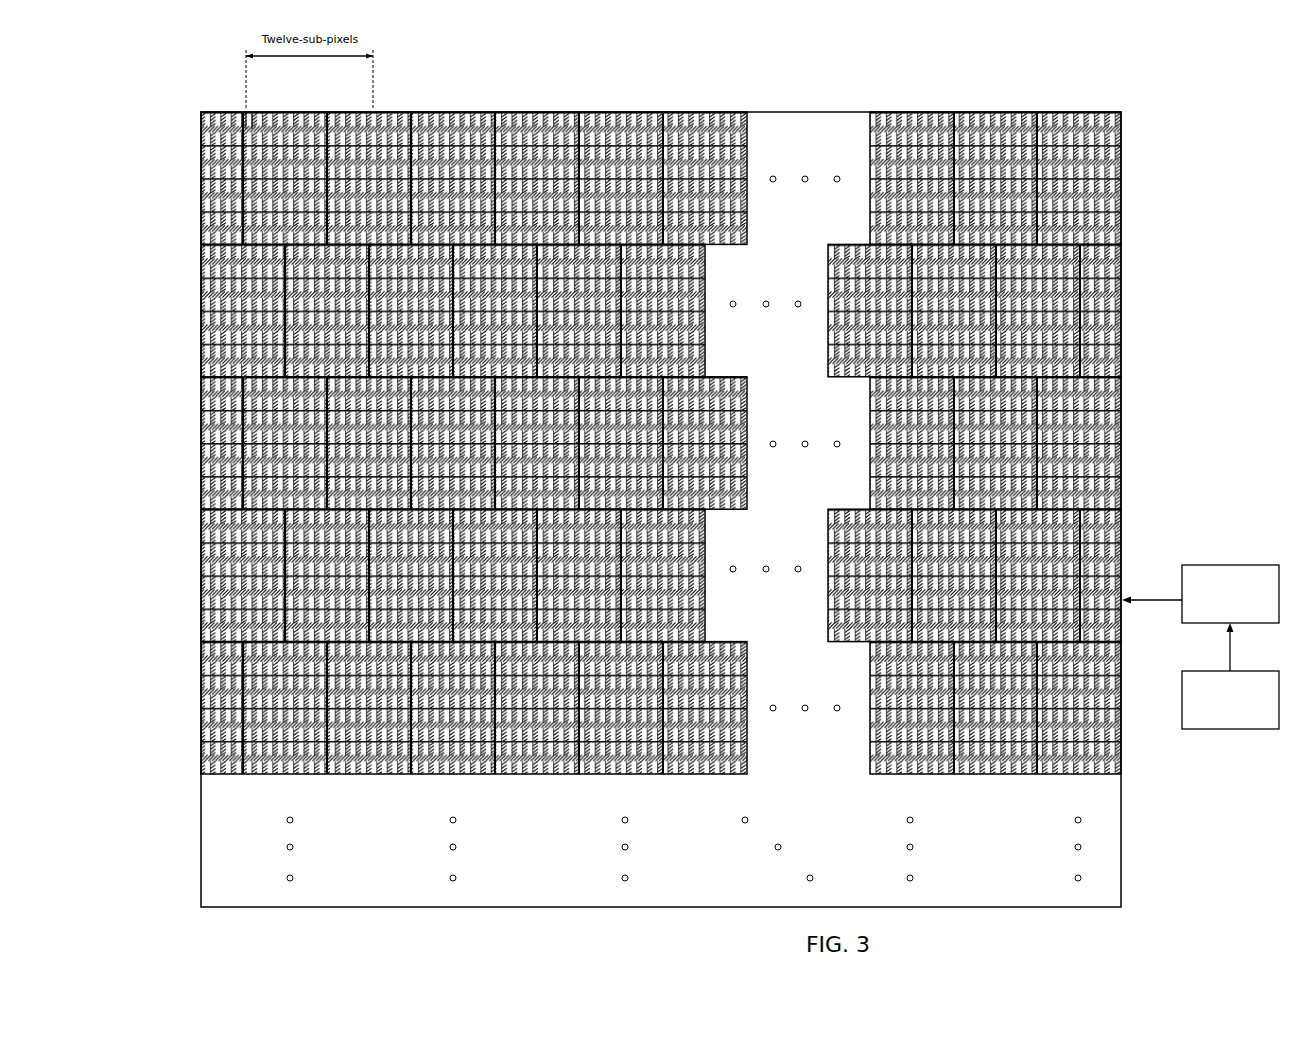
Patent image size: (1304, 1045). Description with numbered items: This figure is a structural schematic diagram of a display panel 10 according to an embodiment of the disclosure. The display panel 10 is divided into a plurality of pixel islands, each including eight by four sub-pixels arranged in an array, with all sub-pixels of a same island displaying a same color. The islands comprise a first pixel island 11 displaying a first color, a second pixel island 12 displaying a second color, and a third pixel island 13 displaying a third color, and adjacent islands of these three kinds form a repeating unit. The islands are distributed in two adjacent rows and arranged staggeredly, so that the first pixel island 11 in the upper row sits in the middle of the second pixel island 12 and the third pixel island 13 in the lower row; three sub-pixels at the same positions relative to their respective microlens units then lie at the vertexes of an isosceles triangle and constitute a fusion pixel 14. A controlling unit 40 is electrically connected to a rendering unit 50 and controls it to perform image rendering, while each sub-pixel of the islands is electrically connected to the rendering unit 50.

The display panel 10 is at (1122, 373).
The first pixel island 11 is at (325, 109).
The second pixel island 12 is at (409, 109).
The third pixel island 13 is at (493, 109).
The fusion pixel 14 is at (203, 143).
The controlling unit 40 is at (1232, 729).
The rendering unit 50 is at (1234, 565).